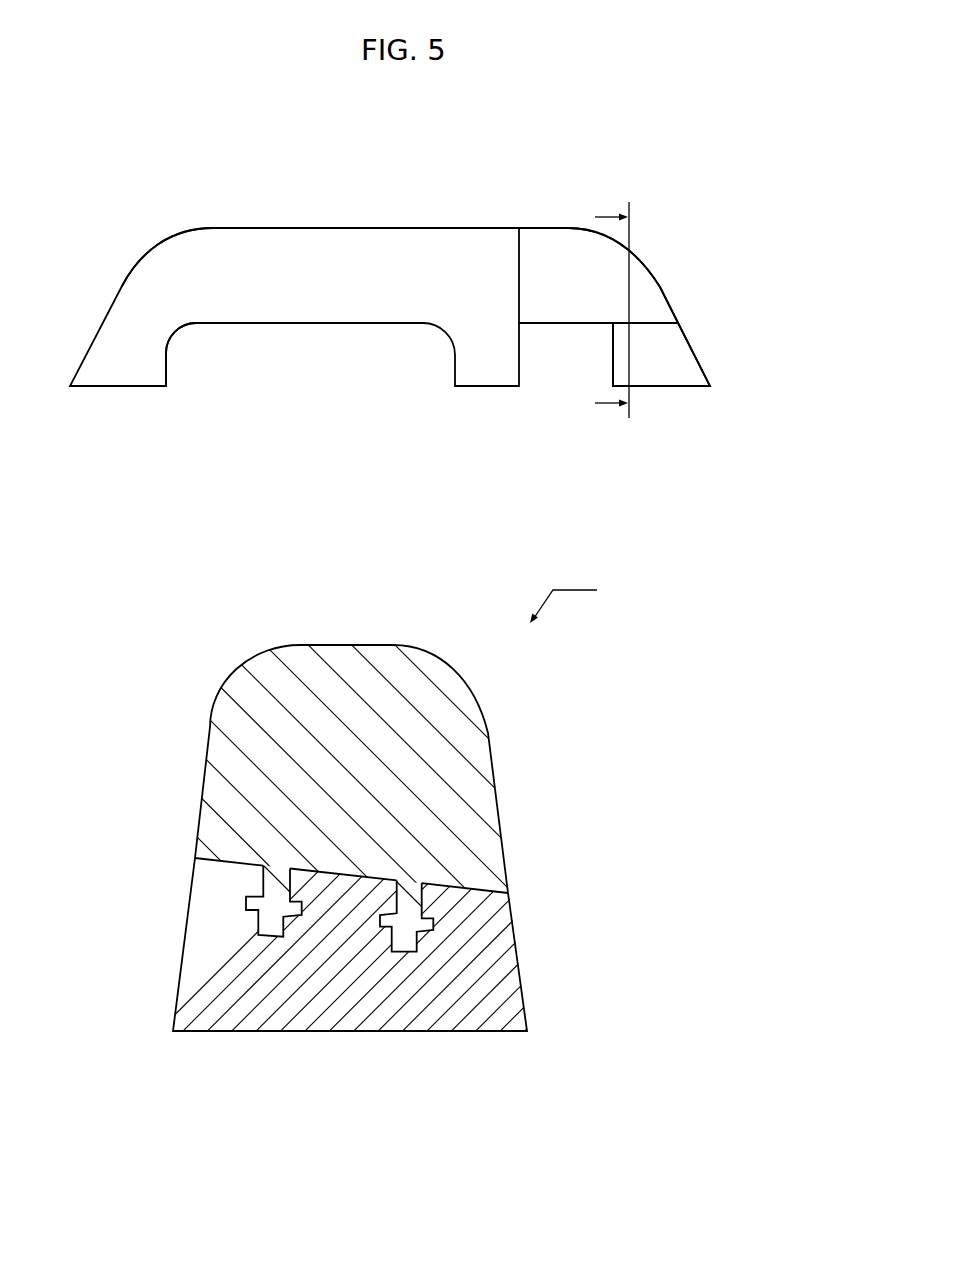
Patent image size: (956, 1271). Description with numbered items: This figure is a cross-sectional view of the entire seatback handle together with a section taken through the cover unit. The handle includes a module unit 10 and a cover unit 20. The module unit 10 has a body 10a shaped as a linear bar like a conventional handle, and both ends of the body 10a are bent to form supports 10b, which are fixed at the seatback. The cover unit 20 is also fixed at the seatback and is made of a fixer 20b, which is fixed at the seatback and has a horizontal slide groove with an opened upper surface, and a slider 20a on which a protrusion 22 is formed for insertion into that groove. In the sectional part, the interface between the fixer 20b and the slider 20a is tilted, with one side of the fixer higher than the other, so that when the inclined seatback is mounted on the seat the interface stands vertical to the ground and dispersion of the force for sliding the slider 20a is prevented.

The module unit 10 is at (147, 184).
The body 10a is at (292, 250).
The supports 10b is at (148, 357).
The cover unit 20 is at (692, 216).
The slider 20a is at (645, 305).
The fixer 20b is at (687, 362).
The protrusion 22 is at (400, 943).